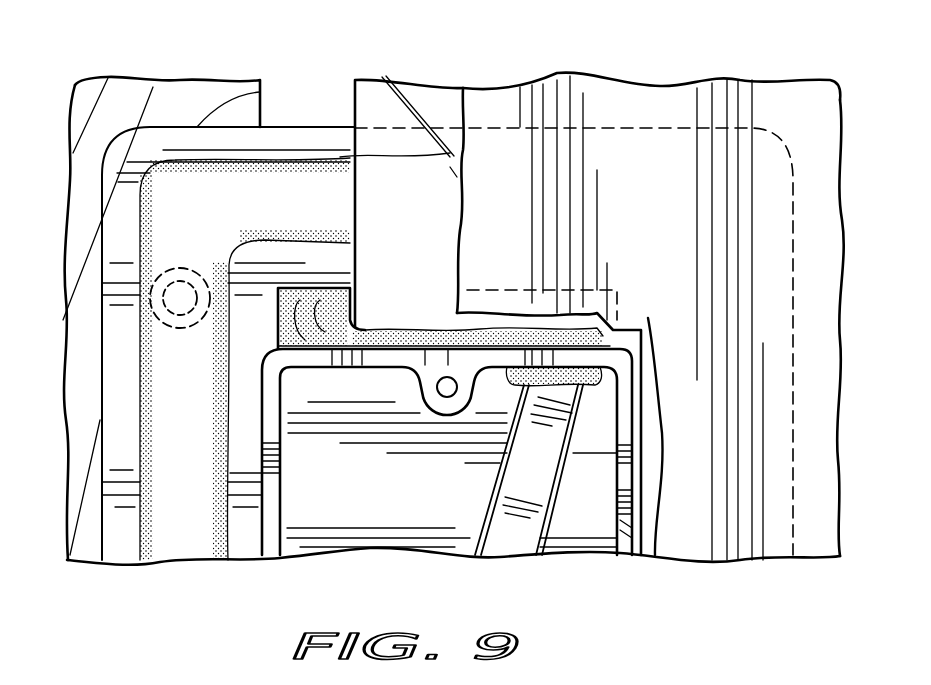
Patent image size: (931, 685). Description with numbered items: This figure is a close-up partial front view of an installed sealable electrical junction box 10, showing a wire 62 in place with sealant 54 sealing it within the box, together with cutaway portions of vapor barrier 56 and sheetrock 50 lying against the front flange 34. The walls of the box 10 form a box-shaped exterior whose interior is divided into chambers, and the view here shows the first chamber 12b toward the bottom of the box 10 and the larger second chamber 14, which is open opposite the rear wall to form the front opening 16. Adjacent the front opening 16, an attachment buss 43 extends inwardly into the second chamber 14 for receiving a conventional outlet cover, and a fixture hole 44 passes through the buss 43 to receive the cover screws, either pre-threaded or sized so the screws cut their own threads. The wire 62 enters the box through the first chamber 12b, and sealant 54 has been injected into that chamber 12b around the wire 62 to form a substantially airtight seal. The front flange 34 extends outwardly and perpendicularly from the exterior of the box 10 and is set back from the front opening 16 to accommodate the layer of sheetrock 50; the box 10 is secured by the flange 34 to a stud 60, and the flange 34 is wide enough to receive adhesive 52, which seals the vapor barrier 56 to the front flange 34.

The sealable electrical junction box 10 is at (303, 497).
The first chamber 12b is at (302, 305).
The second chamber 14 is at (443, 497).
The front opening 16 is at (340, 517).
The front flange 34 is at (130, 537).
The attachment buss 43 is at (426, 389).
The fixture hole 44 is at (446, 398).
The sheetrock 50 is at (661, 183).
The adhesive 52 is at (313, 173).
The sealant 54 is at (335, 300).
The vapor barrier 56 is at (383, 100).
The stud 60 is at (180, 100).
The wire 62 is at (530, 523).